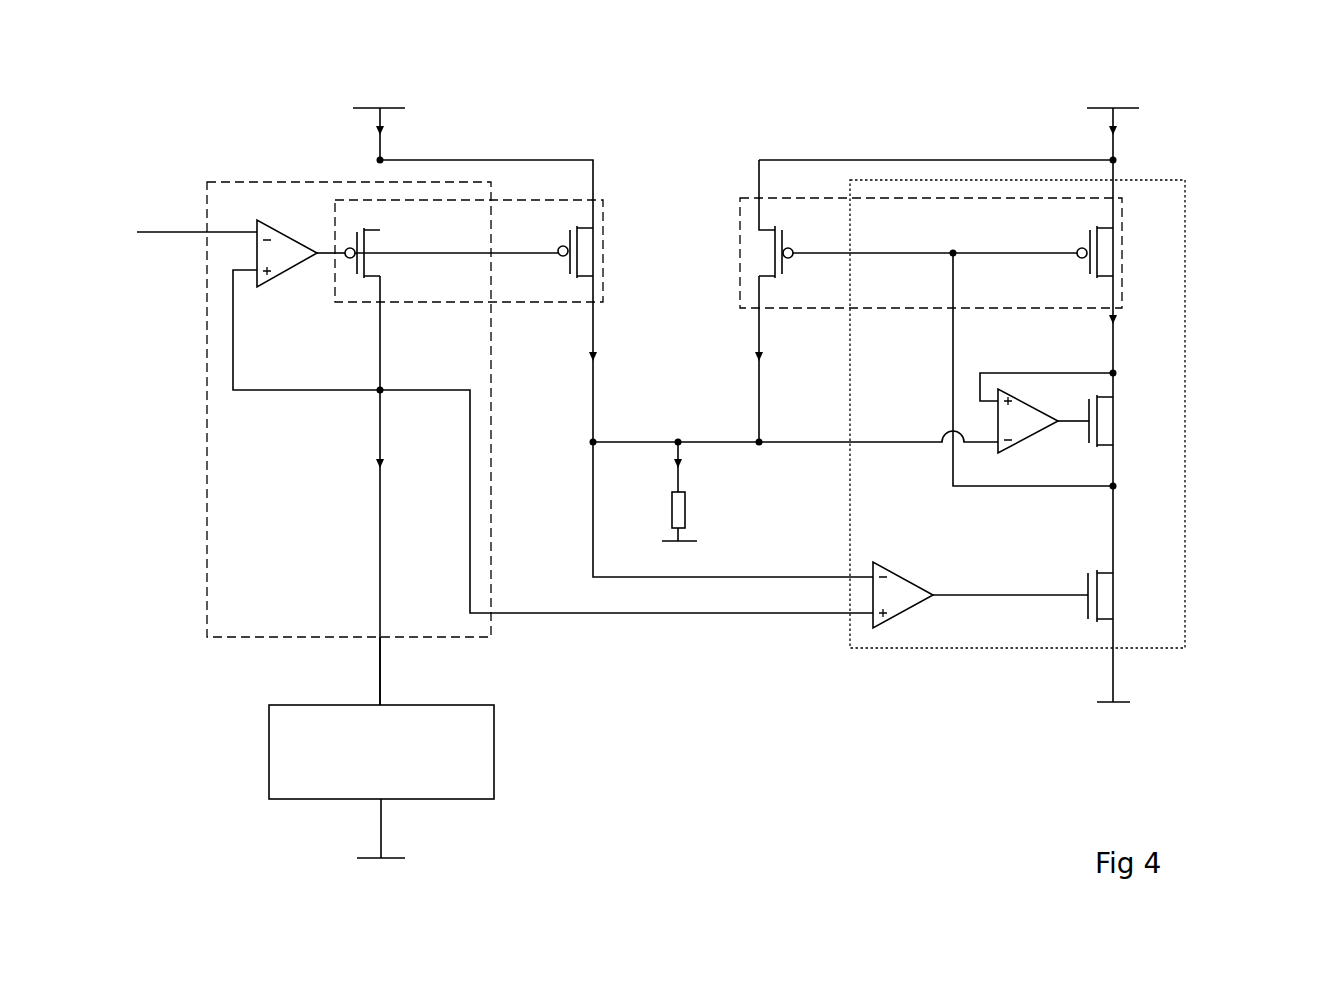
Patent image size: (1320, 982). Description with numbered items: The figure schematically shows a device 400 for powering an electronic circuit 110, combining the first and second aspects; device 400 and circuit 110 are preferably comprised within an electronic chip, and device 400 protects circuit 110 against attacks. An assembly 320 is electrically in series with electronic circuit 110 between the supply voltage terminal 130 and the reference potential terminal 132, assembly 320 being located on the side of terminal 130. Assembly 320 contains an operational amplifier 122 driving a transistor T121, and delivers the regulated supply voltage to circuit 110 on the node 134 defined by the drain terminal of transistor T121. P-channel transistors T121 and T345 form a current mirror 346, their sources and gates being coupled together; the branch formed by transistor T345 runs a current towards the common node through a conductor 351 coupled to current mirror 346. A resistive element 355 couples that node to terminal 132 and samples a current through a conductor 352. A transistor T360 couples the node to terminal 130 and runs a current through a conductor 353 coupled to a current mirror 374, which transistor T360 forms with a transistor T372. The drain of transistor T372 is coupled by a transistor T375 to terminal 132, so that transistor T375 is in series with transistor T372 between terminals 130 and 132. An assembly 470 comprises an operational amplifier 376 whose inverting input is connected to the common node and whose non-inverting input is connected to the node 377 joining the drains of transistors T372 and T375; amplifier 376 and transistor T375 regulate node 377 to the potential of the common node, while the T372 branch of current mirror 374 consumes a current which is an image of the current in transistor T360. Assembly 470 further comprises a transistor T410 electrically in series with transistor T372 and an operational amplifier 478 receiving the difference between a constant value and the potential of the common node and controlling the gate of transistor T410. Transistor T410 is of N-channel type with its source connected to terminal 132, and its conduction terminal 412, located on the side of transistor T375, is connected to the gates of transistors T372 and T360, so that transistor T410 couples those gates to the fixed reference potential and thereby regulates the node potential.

The device 400 is at (212, 117).
The terminal of application of voltage VCC 130 is at (378, 121).
The transistor T121 is at (340, 236).
The operational amplifier 122 is at (297, 278).
The current mirror 346 is at (441, 199).
The transistor T345 is at (590, 249).
The transistor T360 is at (760, 251).
The conductor 353 is at (758, 337).
The conductor 351 is at (592, 410).
The conductor 352 is at (683, 452).
The resistive element 355 is at (686, 510).
The current mirror 374 is at (925, 197).
The assembly 470 is at (882, 179).
The transistor T372 is at (1120, 242).
The node 377 is at (1118, 373).
The operational amplifier 376 is at (1037, 426).
The transistor T375 is at (1110, 425).
The conduction terminal 412 is at (1118, 486).
The operational amplifier 478 is at (912, 599).
The transistor T410 is at (1112, 593).
The electronic circuit 110 is at (482, 780).
The node 134 is at (384, 685).
The terminal of application of reference potential GND 132 is at (378, 831).
The assembly 320 is at (255, 638).